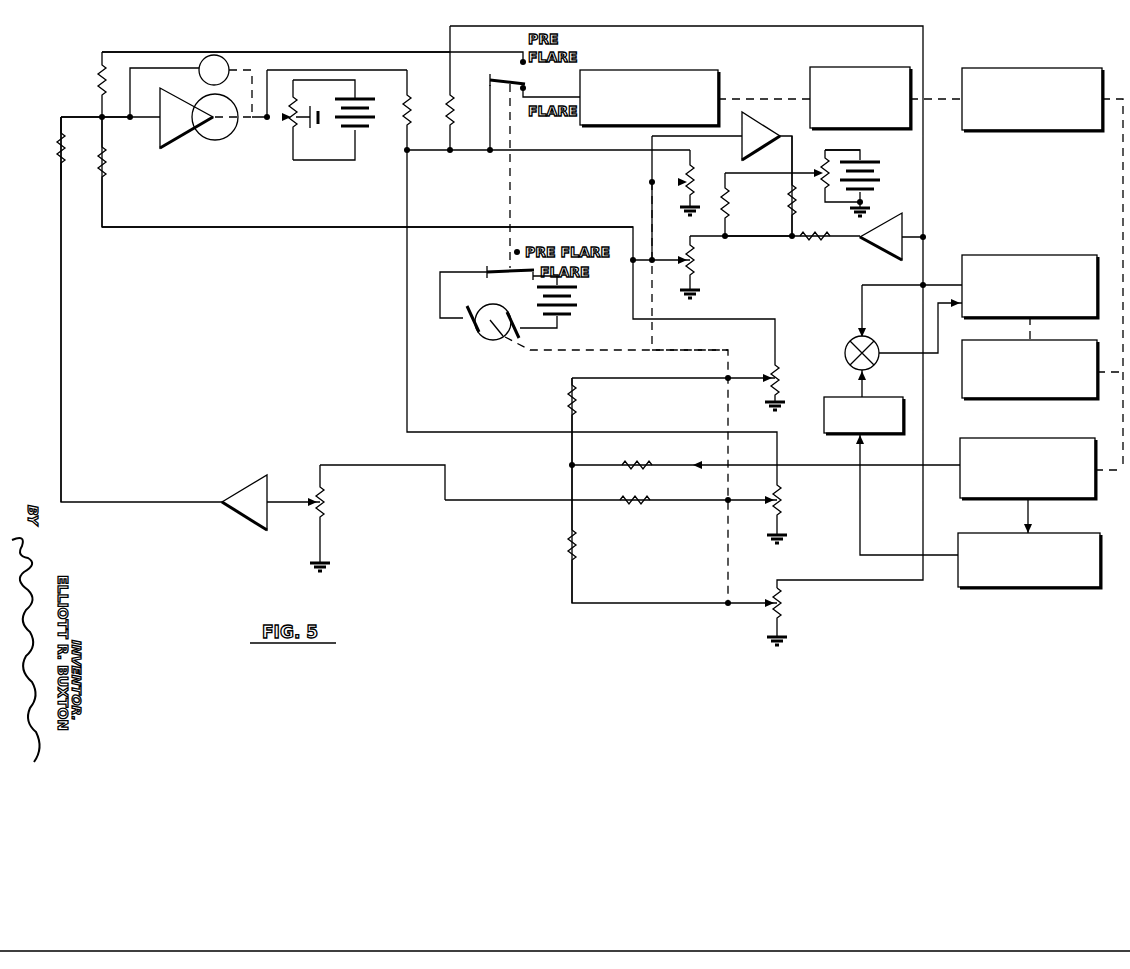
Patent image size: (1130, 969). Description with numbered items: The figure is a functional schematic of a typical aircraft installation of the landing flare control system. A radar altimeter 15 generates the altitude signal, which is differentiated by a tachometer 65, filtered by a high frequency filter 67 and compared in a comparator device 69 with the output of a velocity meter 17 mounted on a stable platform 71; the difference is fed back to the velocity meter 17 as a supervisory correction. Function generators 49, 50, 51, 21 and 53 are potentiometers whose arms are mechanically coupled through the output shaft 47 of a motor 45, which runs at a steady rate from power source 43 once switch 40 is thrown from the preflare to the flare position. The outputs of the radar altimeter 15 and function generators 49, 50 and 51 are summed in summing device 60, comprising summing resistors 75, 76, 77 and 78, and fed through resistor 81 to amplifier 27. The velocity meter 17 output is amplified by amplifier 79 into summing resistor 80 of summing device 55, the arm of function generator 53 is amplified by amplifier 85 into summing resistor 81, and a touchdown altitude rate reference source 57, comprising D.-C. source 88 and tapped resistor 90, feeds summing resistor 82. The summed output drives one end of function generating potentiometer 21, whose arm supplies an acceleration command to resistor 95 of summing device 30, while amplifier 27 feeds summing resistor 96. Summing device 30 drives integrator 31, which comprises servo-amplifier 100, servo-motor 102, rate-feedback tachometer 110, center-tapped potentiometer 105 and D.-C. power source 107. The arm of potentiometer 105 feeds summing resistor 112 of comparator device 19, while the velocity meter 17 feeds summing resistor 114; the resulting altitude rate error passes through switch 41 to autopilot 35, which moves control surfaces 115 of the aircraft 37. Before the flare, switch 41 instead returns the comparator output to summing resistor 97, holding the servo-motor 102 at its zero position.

The radar altimeter 15 is at (1020, 440).
The velocity meter 17 is at (1022, 258).
The comparator device 19 is at (438, 145).
The function generating potentiometer 21 is at (692, 262).
The amplifier 27 is at (256, 528).
The summing device 30 is at (90, 109).
The integrator 31 is at (192, 201).
The autopilot 35 is at (700, 92).
The aircraft 37 is at (1066, 128).
The switch 40 is at (502, 268).
The switch 41 is at (512, 82).
The power source 43 is at (572, 300).
The motor 45 is at (486, 338).
The output shaft 47 is at (670, 352).
The function generator 49 is at (788, 606).
The function generator 50 is at (786, 508).
The function generator 51 is at (780, 380).
The function generator 53 is at (672, 184).
The summing device 55 is at (768, 227).
The touchdown altitude rate reference source 57 is at (894, 155).
The summing device 60 is at (614, 487).
The tachometer 65 is at (1044, 600).
The high frequency filter 67 is at (880, 400).
The comparator device 69 is at (872, 342).
The stable platform 71 is at (1084, 394).
The summing resistor 75 is at (642, 462).
The summing resistor 76 is at (640, 512).
The summing resistor 77 is at (578, 550).
The summing resistor 78 is at (578, 402).
The amplifier 79 is at (908, 226).
The summing resistor 80 is at (818, 240).
The summing resistor 81 is at (790, 196).
The summing resistor 82 is at (723, 190).
The amplifier 85 is at (752, 128).
The D.-C. source 88 is at (876, 176).
The tapped resistor 90 is at (822, 190).
The resistor 95 is at (100, 182).
The summing resistor 96 is at (60, 160).
The summing resistor 97 is at (100, 78).
The servo-amplifier 100 is at (168, 138).
The servo-motor 102 is at (230, 136).
The potentiometer 105 is at (294, 135).
The D.-C. power source 107 is at (370, 135).
The tachometer 110 is at (214, 55).
The summing resistor 112 is at (409, 108).
The summing resistor 114 is at (452, 105).
The control surfaces 115 is at (838, 72).